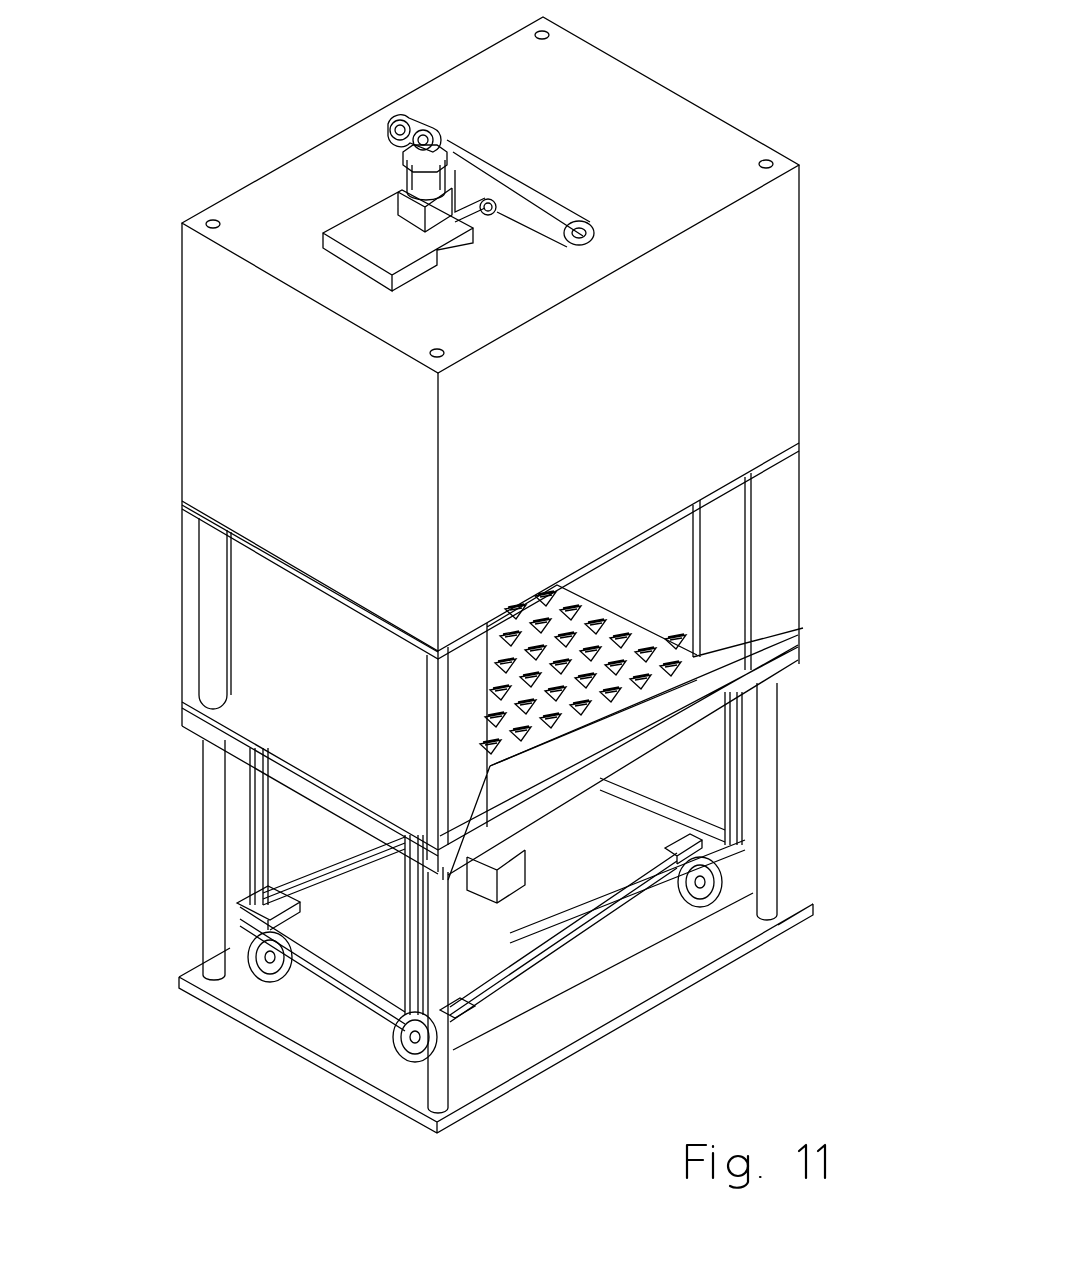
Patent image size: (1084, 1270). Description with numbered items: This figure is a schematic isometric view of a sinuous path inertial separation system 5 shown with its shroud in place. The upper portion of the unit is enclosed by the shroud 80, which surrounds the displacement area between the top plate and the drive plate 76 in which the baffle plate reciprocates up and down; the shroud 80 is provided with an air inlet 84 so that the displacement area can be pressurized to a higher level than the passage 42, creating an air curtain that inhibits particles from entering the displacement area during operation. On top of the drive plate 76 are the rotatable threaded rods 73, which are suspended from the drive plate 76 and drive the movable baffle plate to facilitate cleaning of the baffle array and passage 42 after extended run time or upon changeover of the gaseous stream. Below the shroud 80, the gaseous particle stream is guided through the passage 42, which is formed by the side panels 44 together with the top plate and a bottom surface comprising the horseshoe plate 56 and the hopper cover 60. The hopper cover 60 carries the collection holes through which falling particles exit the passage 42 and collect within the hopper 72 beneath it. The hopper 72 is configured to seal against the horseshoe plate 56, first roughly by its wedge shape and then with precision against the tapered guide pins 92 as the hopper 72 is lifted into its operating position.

The sinuous path inertial separation system (SPIS) 5 is at (675, 88).
The rotatable threaded rods 73 is at (400, 133).
The drive plate 76 is at (643, 155).
The shroud 80 is at (722, 318).
The air inlet 84 is at (307, 563).
The tapered guide pins 92 is at (263, 703).
The passage 42 is at (633, 580).
The side panels 44 is at (720, 555).
The hopper cover 60 is at (672, 667).
The horseshoe plate 56 is at (628, 718).
The hopper 72 is at (508, 877).